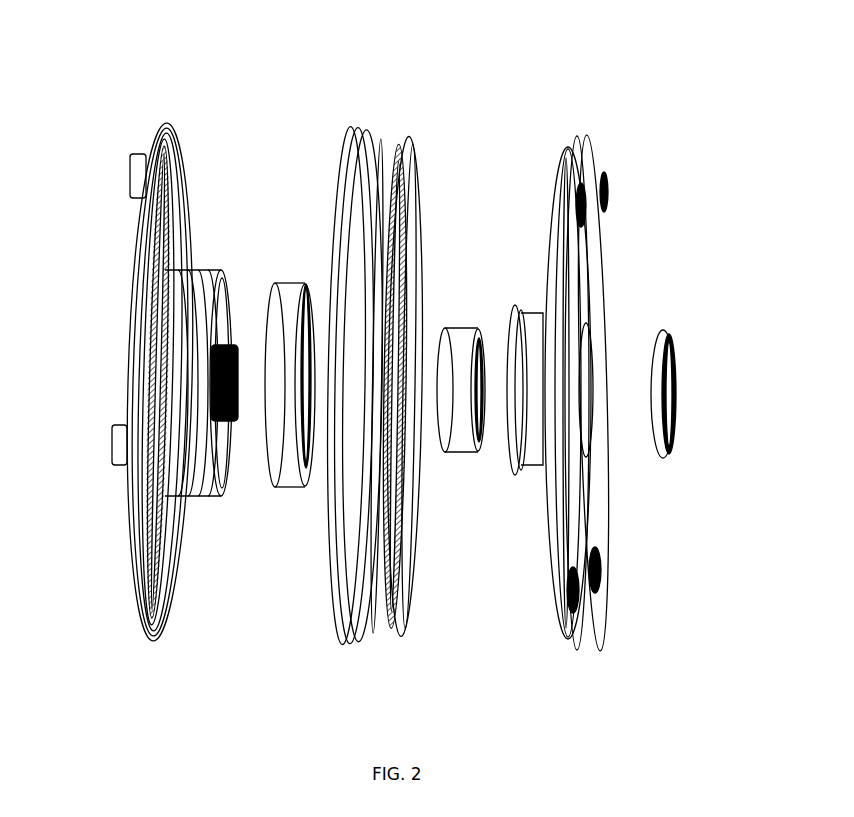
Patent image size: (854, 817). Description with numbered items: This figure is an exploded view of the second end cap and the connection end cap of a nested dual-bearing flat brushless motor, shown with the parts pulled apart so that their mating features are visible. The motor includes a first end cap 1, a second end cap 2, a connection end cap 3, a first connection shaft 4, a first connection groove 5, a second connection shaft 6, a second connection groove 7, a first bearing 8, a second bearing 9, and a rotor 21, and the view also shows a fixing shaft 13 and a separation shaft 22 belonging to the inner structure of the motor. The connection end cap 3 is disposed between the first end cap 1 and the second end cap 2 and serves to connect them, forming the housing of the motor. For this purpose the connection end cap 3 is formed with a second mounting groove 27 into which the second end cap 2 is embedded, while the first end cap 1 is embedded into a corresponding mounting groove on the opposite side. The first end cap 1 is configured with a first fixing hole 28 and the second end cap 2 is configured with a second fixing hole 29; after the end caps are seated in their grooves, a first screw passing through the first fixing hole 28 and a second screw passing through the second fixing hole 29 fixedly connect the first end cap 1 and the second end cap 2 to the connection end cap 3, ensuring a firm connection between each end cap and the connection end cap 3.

The first end cap 1 is at (165, 127).
The second end cap 2 is at (588, 135).
The connection end cap 3 is at (375, 140).
The first connection shaft 4 is at (210, 507).
The first connection groove 5 is at (603, 550).
The second connection shaft 6 is at (533, 420).
The second connection groove 7 is at (232, 297).
The first bearing 8 is at (455, 370).
The second bearing 9 is at (283, 413).
The fixing shaft 13 is at (678, 350).
The rotor 21 is at (413, 300).
The separation shaft 22 is at (195, 402).
The second mounting groove 27 is at (425, 287).
The first fixing hole 28 is at (160, 592).
The second fixing hole 29 is at (596, 565).